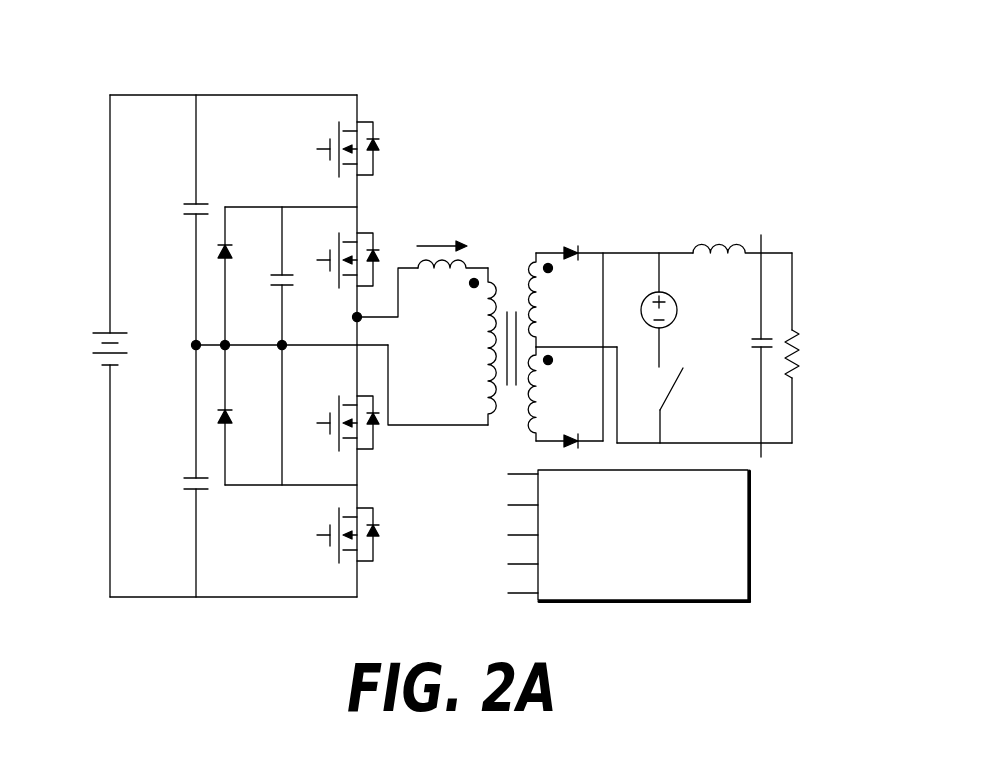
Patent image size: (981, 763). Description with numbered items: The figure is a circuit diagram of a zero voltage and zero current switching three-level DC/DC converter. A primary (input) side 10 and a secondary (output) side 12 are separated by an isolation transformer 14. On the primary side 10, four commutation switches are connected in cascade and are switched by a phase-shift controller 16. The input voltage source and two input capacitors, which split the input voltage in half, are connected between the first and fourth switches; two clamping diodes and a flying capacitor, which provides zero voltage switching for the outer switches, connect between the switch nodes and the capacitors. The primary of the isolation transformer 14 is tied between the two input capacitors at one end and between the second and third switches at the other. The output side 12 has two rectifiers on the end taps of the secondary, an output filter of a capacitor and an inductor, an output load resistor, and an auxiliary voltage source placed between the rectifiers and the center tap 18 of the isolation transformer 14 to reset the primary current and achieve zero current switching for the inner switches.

The primary (input) side 10 is at (341, 66).
The secondary (output) side 12 is at (688, 190).
The isolation transformer 14 is at (512, 252).
The phase-shift controller 16 is at (749, 538).
The center tap 18 is at (539, 341).